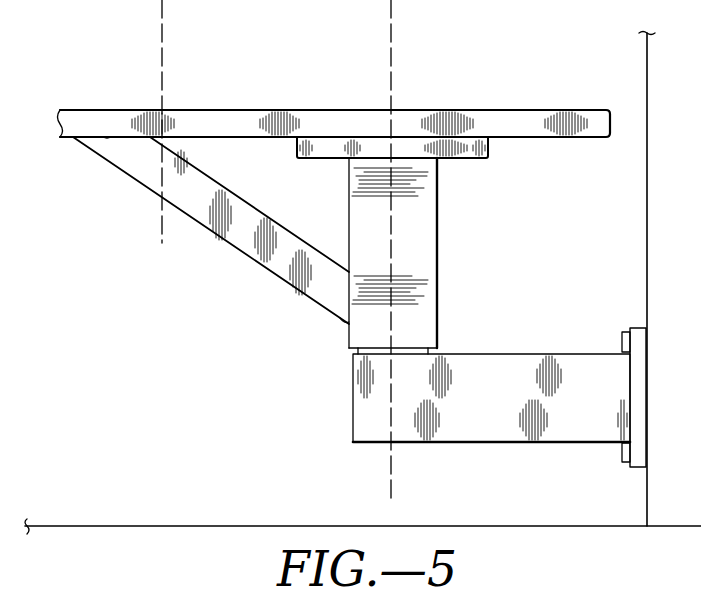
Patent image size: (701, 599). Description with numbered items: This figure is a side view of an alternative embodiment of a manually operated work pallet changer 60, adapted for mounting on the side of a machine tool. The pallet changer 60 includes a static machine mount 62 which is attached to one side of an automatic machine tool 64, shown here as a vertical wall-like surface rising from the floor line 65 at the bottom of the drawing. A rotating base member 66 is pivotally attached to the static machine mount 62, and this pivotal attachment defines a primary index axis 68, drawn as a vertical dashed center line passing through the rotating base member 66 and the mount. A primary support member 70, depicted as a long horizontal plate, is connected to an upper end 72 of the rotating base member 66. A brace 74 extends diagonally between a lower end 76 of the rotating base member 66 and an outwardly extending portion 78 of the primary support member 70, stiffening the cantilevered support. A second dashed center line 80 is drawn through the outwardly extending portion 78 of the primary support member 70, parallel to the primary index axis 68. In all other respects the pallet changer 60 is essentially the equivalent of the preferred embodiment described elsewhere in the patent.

The work pallet changer 60 is at (160, 362).
The static machine mount 62 is at (353, 422).
The automatic machine tool 64 is at (647, 263).
The floor 65 is at (115, 526).
The rotating base member 66 is at (421, 260).
The primary index axis 68 is at (391, 72).
The primary support member 70 is at (578, 138).
The upper end 72 is at (472, 159).
The brace 74 is at (223, 241).
The lower end 76 is at (349, 321).
The outwardly extending portion 78 is at (108, 139).
The brace axis 80 is at (162, 37).